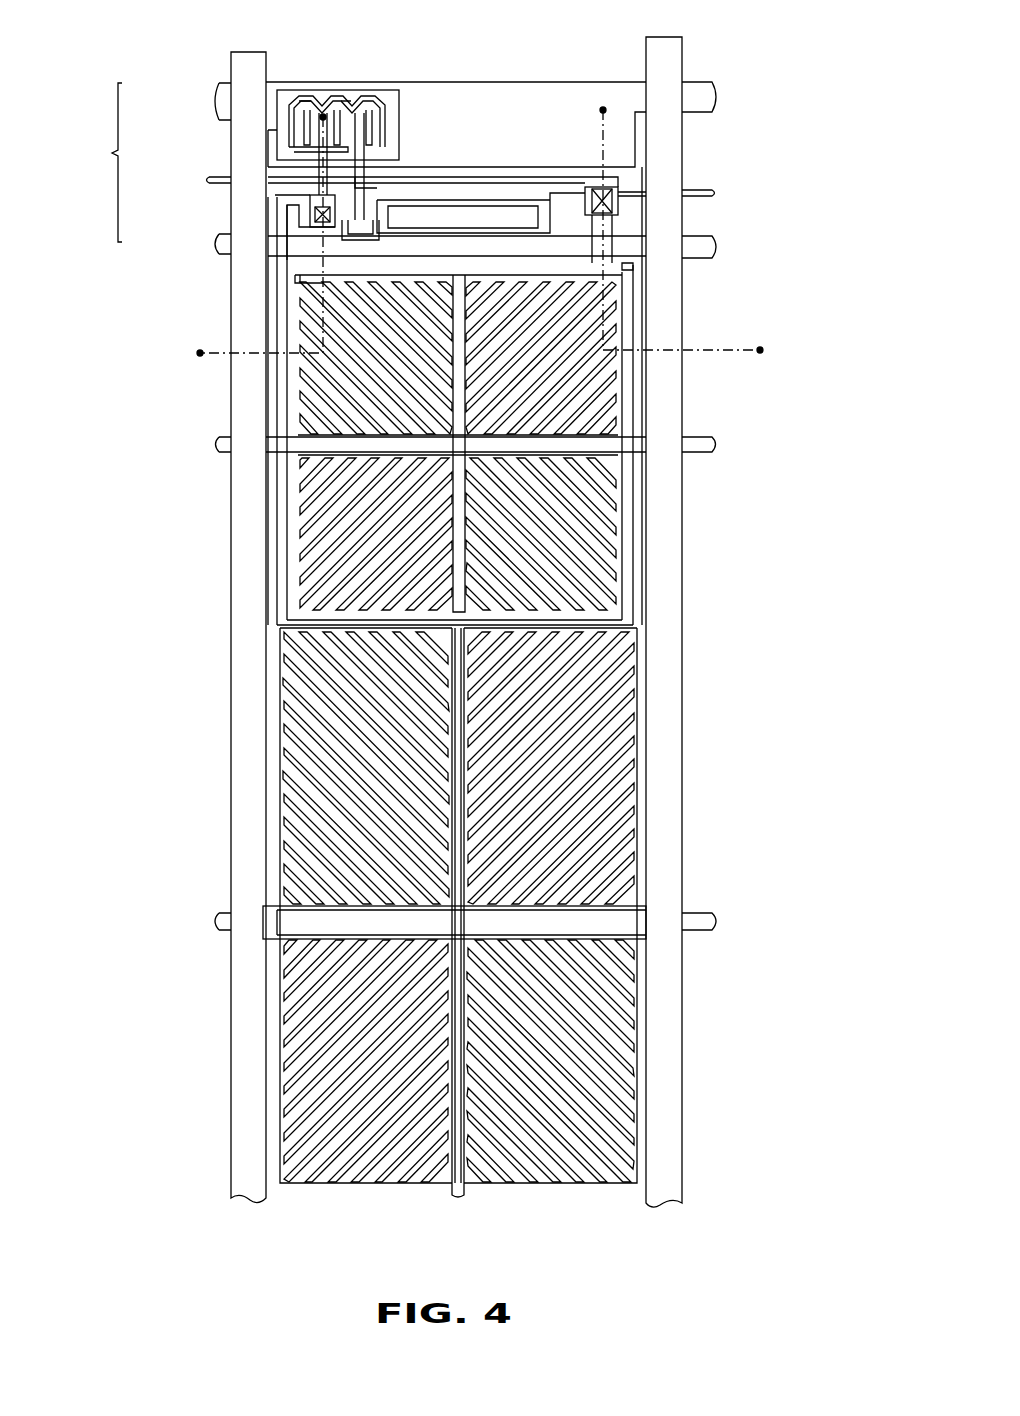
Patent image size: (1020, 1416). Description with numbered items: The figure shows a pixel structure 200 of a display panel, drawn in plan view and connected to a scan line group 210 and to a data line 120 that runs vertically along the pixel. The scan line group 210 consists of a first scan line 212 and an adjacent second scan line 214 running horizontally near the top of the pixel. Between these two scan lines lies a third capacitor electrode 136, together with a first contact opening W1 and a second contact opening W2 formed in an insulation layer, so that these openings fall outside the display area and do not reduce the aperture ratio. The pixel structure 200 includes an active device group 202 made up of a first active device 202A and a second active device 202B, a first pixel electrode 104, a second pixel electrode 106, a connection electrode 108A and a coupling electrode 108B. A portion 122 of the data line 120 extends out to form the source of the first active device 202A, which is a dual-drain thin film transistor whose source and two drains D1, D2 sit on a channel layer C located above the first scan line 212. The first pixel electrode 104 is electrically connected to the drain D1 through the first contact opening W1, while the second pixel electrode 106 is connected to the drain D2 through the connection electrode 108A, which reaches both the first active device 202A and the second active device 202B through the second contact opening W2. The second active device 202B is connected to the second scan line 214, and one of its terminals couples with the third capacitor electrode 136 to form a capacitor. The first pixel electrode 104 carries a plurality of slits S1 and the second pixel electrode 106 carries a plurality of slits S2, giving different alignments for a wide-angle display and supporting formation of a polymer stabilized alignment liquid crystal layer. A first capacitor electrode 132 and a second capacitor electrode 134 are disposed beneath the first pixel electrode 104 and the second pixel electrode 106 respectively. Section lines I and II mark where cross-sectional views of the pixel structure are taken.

The pixel structure 200 is at (610, 1215).
The data line 120 is at (237, 688).
The extended portion of the data line 122 is at (288, 100).
The scan line group 210 is at (97, 162).
The first scan line 212 is at (217, 108).
The second scan line 214 is at (217, 246).
The active device group 202 is at (556, 42).
The first active device 202A is at (414, 123).
The second active device 202B is at (360, 200).
The channel layer C is at (393, 107).
The drain D1 is at (365, 117).
The drain D2 is at (292, 100).
The line I-I' I is at (323, 113).
The line II-II' II is at (603, 108).
The third capacitor electrode 136 is at (712, 186).
The first contact opening W1 is at (620, 202).
The second contact opening W2 is at (313, 212).
The first capacitor electrode 132 is at (217, 443).
The second capacitor electrode 134 is at (217, 920).
The first pixel electrode 104 is at (607, 538).
The second pixel electrode 106 is at (612, 735).
The connection electrode 108A is at (285, 531).
The coupling electrode 108B is at (627, 517).
The slits S1 is at (350, 384).
The slits S2 is at (325, 838).